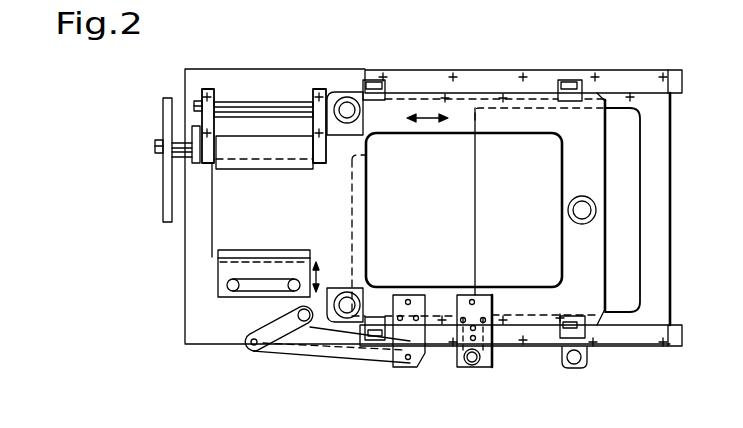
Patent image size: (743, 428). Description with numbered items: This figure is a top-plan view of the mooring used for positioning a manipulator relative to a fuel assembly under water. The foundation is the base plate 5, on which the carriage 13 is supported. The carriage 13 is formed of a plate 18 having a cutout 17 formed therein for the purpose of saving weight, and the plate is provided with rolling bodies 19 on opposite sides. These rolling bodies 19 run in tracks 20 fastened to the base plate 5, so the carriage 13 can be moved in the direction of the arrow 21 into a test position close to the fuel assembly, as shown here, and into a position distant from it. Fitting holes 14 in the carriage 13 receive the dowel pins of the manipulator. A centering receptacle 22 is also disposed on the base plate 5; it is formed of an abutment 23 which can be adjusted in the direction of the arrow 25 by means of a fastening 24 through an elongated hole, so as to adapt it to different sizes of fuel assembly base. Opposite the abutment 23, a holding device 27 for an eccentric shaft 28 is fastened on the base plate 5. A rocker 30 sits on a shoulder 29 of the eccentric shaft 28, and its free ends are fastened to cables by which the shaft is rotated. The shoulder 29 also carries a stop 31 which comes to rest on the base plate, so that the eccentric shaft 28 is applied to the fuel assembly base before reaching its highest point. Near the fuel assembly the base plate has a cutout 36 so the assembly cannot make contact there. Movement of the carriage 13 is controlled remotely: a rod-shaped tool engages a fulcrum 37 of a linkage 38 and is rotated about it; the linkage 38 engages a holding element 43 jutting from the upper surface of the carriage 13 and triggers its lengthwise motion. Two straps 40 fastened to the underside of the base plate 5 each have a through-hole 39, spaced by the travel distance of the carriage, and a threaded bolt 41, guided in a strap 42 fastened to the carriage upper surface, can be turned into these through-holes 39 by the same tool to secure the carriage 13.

The base plate 5 is at (662, 228).
The carriage 13 is at (593, 167).
The fitting holes 14 is at (590, 208).
The cutout 17 is at (562, 266).
The plate 18 is at (598, 153).
The rolling bodies 19 is at (384, 92).
The tracks 20 is at (478, 80).
The arrow 21 is at (426, 115).
The centering receptacle 22 is at (174, 96).
The abutment 23 is at (220, 274).
The fastening 24 is at (236, 291).
The arrow 25 is at (318, 276).
The holding device 27 is at (303, 91).
The eccentric shaft 28 is at (262, 153).
The shoulder 29 is at (174, 150).
The rocker 30 is at (163, 132).
The stop 31 is at (191, 125).
The cutout 36 is at (213, 211).
The fulcrum 37 is at (303, 347).
The linkage 38 is at (270, 357).
The through-hole 39 is at (589, 360).
The straps 40 is at (563, 353).
The threaded bolt 41 is at (484, 358).
The strap 42 is at (488, 300).
The holding element 43 is at (424, 300).